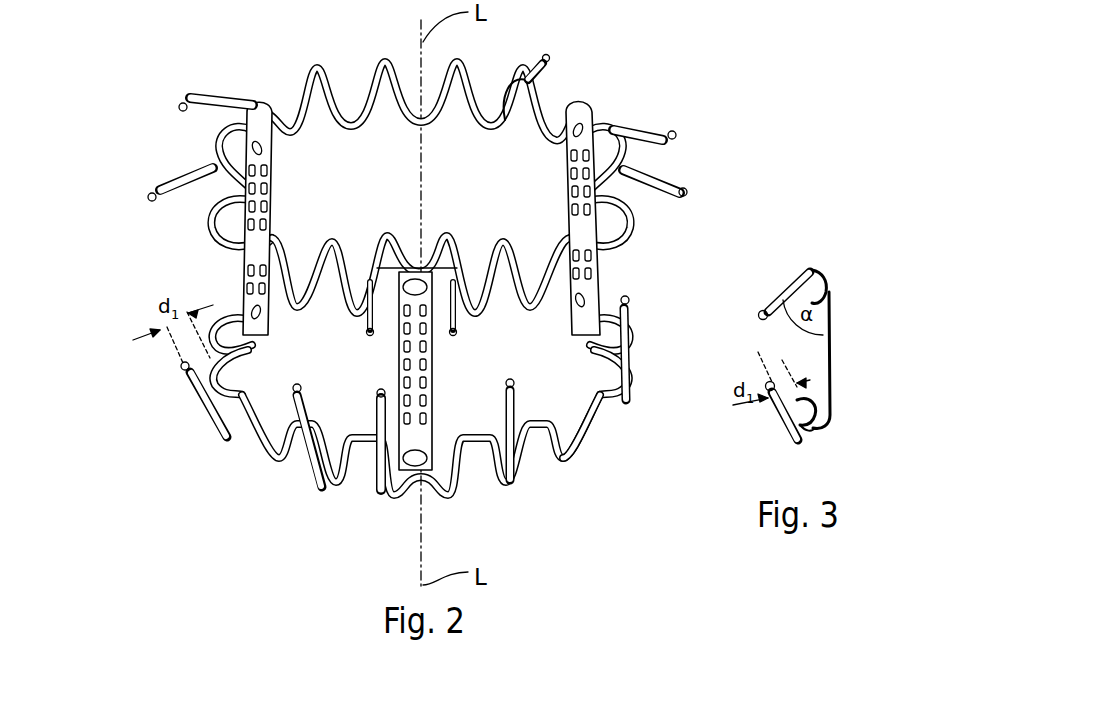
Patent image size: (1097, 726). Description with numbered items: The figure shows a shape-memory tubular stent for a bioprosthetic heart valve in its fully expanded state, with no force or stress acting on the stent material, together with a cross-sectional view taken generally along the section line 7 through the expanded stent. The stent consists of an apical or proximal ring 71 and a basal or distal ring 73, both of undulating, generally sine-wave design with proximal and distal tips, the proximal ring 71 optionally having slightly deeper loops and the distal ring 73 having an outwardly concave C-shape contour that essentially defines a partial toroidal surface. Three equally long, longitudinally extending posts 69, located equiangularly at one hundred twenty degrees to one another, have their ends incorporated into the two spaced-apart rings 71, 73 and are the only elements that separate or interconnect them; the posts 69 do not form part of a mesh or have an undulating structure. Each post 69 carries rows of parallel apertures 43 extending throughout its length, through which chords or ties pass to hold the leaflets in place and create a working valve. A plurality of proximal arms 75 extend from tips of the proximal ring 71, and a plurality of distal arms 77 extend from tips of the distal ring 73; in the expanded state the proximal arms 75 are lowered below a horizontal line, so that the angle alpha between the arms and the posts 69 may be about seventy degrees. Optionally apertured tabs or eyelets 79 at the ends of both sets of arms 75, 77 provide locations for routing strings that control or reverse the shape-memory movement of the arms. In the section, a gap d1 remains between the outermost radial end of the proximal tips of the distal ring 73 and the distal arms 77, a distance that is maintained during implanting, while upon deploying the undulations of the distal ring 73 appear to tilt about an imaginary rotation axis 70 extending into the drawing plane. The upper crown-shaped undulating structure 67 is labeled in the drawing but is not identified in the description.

In FIG. 2, the section line 7- 7 is at (487, 245).
In FIG. 2, the parallel apertures 43 is at (272, 182).
In FIG. 2, the outflow crown wave strut 67 is at (338, 55).
In FIG. 2, the longitudinally extending posts 69 is at (438, 400).
In FIG. 3, the longitudinally extending posts 69 is at (834, 308).
In FIG. 3, the imaginary rotation axis 70 is at (820, 430).
In FIG. 2, the proximal ring 71 is at (458, 68).
In FIG. 3, the proximal ring 71 is at (824, 270).
In FIG. 2, the distal ring 73 is at (607, 433).
In FIG. 3, the distal ring 73 is at (814, 408).
In FIG. 2, the proximal arms 75 is at (200, 99).
In FIG. 3, the proximal arms 75 is at (790, 290).
In FIG. 2, the distal arms 77 is at (217, 423).
In FIG. 3, the distal arms 77 is at (783, 420).
In FIG. 2, the eyelets 79 is at (180, 108).
In FIG. 3, the eyelets 79 is at (771, 380).